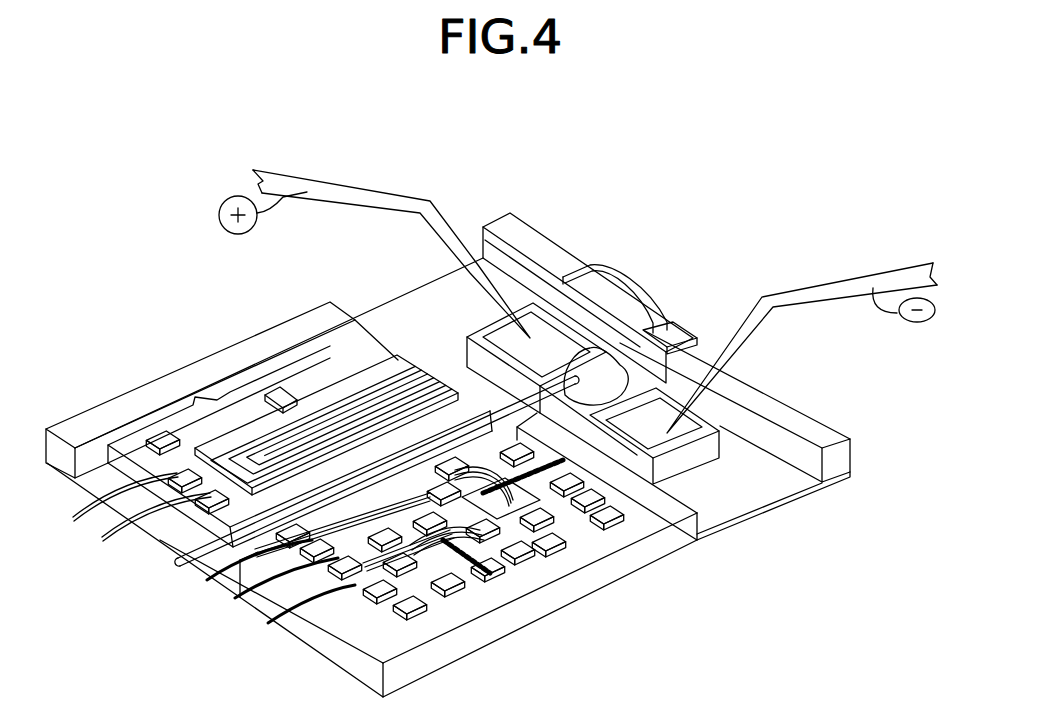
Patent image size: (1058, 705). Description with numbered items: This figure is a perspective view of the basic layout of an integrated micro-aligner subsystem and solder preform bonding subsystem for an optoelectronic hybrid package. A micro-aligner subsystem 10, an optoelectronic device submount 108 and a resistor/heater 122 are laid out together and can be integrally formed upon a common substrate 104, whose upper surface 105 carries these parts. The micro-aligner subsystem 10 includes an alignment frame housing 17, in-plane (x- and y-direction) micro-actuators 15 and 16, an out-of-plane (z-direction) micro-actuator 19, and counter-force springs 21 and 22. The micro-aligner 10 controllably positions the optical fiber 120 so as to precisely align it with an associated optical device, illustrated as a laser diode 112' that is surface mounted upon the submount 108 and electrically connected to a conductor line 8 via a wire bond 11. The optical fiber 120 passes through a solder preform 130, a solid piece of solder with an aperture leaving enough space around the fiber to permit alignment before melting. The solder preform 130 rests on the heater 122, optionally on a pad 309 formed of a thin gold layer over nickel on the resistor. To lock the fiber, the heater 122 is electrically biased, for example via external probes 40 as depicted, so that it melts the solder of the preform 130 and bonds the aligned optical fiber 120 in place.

The conductor line 8 is at (542, 235).
The micro-aligner subsystem 10 is at (310, 377).
The wire bond 11 is at (650, 294).
The in-plane micro-actuator 15 is at (475, 505).
The in-plane micro-actuator 16 is at (548, 462).
The alignment frame housing 17 is at (135, 400).
The out-of-plane micro-actuator 19 is at (427, 378).
The counter-force spring 21 is at (230, 393).
The counter-force spring 22 is at (350, 598).
The probe 40 is at (362, 190).
The common substrate 104 is at (713, 538).
The base plate surface 105 is at (768, 492).
The optoelectronic device submount 108 is at (782, 412).
The laser diode 112' is at (722, 308).
The optical fiber 120 is at (187, 562).
The resistive heater 122 is at (541, 310).
The solder preform 130 is at (597, 360).
The pad 309 is at (636, 398).